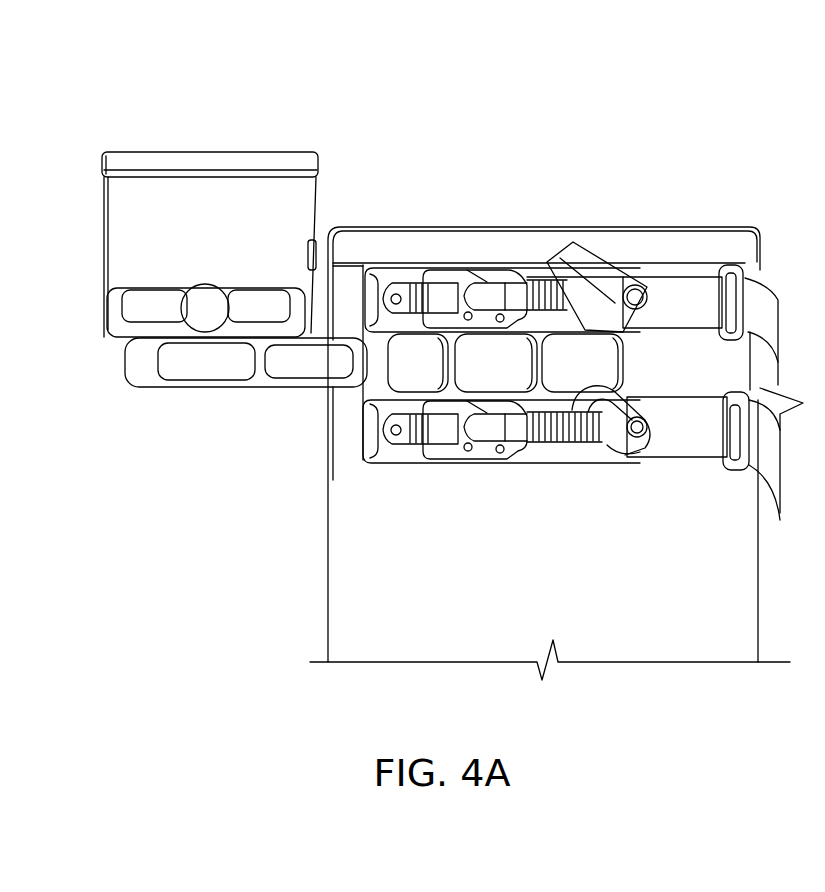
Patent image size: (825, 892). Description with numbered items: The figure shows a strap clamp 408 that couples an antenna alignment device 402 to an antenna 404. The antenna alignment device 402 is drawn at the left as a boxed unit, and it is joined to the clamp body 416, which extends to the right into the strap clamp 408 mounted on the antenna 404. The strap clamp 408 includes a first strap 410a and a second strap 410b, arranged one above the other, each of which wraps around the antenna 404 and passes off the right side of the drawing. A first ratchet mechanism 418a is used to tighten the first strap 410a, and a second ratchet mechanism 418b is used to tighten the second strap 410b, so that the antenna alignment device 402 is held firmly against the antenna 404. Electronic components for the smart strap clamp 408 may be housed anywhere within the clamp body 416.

The antenna alignment device 402 is at (158, 152).
The antenna 404 is at (722, 228).
The strap clamp 408 is at (563, 538).
The first strap 410a is at (663, 290).
The second strap 410b is at (664, 438).
The clamp body 416 is at (377, 378).
The first ratchet mechanism 418a is at (497, 290).
The second ratchet mechanism 418b is at (441, 463).